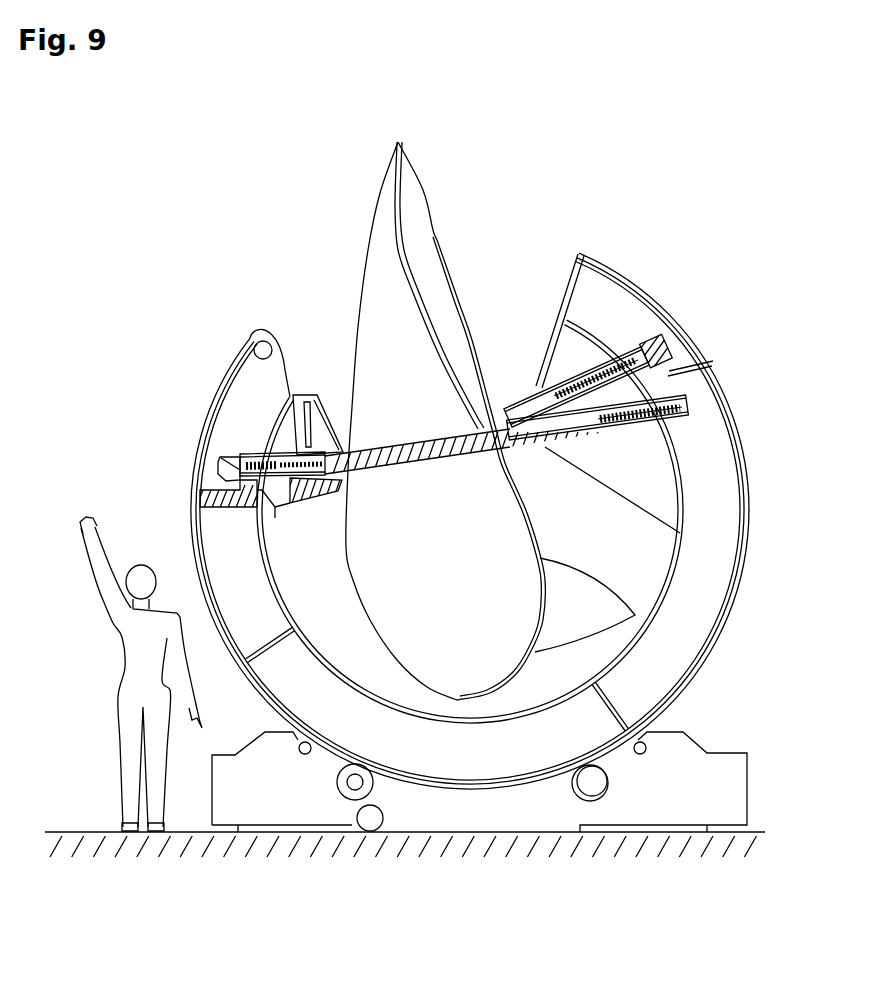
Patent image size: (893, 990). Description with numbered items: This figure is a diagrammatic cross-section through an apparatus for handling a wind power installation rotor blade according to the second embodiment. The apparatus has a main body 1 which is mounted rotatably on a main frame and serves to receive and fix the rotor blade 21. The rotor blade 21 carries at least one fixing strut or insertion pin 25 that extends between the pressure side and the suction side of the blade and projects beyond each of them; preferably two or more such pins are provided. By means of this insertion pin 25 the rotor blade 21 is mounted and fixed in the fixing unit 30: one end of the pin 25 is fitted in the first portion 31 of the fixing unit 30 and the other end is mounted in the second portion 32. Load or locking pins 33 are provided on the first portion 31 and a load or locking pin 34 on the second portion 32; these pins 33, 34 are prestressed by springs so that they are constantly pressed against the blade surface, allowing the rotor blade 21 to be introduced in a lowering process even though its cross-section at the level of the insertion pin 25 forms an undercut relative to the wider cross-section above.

The main body 1 is at (217, 542).
The rotor blade 21 is at (417, 210).
The insertion pin 25 is at (487, 428).
The fixing unit 30 is at (311, 382).
The first portion 31 is at (538, 446).
The second portion 32 is at (303, 502).
The load pins 33 is at (530, 398).
The load pin 34 is at (300, 450).